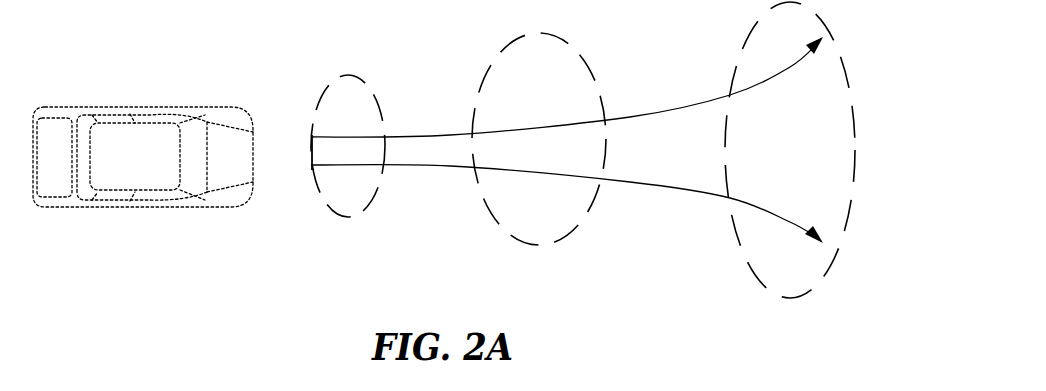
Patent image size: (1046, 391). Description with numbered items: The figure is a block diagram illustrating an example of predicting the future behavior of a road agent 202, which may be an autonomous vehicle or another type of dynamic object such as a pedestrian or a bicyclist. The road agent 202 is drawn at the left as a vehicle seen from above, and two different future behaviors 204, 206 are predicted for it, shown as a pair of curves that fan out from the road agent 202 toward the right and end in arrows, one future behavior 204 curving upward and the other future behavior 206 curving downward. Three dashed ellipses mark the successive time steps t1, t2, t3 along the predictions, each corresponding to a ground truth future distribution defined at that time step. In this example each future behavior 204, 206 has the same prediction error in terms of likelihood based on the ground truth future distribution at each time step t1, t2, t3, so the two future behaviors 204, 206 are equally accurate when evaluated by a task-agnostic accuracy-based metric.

The road agent 202 is at (148, 165).
The future behavior 204 is at (652, 112).
The future behavior 206 is at (658, 190).
The time step t1 is at (352, 73).
The time step t2 is at (593, 62).
The time step t3 is at (850, 93).